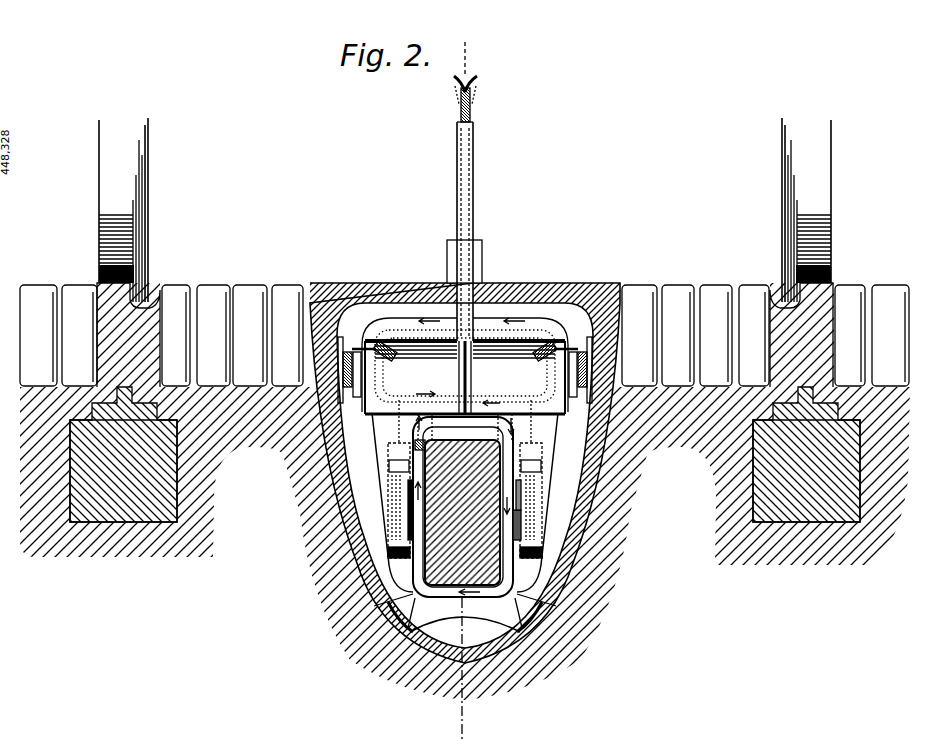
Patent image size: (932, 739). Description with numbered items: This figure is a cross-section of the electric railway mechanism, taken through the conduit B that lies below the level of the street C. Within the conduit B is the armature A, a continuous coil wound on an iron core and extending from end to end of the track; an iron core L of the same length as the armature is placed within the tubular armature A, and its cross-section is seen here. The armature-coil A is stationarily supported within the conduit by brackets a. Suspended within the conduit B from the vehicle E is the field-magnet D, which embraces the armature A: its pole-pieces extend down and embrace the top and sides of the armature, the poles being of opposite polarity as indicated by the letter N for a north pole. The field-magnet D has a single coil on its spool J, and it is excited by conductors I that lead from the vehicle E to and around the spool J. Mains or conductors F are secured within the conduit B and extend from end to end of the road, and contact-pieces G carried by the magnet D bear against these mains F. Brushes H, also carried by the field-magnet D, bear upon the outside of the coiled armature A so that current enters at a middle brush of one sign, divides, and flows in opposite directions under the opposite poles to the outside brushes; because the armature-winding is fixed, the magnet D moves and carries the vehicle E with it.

The armature A is at (463, 507).
The conduit B is at (455, 541).
The street C is at (464, 381).
The field-magnet D is at (380, 458).
The vehicle E is at (465, 252).
The mains or conductors F is at (360, 398).
The contact-pieces G is at (371, 342).
The brushes H is at (465, 500).
The conductors I is at (465, 242).
The spool J is at (465, 361).
The iron core L is at (457, 512).
The north pole N is at (465, 394).
The brackets a is at (465, 613).